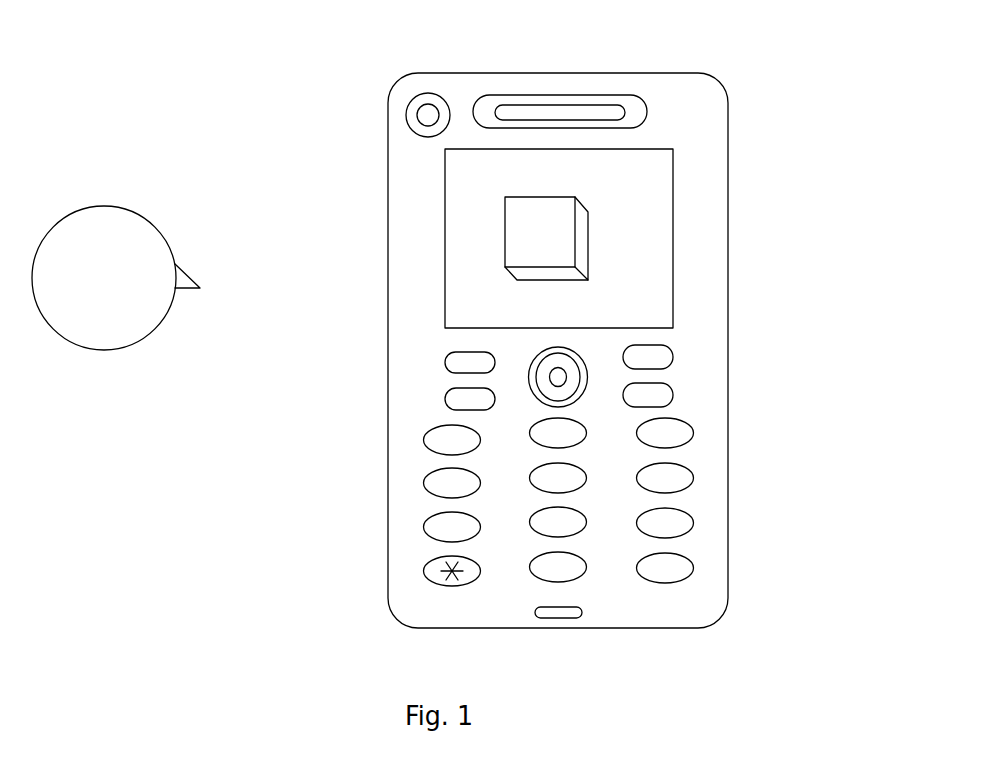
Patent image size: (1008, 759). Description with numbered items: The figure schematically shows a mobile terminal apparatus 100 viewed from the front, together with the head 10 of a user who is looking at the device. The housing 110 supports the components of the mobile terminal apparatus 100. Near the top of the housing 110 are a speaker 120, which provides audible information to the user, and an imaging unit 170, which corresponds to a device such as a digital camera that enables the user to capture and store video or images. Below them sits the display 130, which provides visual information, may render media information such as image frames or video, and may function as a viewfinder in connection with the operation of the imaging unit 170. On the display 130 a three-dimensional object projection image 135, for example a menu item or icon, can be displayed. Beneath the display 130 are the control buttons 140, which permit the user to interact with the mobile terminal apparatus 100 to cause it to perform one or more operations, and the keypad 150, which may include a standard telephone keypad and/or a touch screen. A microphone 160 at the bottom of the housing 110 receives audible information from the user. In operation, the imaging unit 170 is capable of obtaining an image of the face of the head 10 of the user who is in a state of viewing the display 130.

The head 10 is at (205, 196).
The mobile terminal apparatus 100 is at (266, 36).
The housing 110 is at (390, 345).
The speaker 120 is at (560, 96).
The display 130 is at (675, 240).
The three-dimensional object projection image 135 is at (585, 238).
The control buttons 140 is at (658, 373).
The keypad 150 is at (649, 502).
The microphone 160 is at (558, 620).
The imaging unit 170 is at (406, 109).